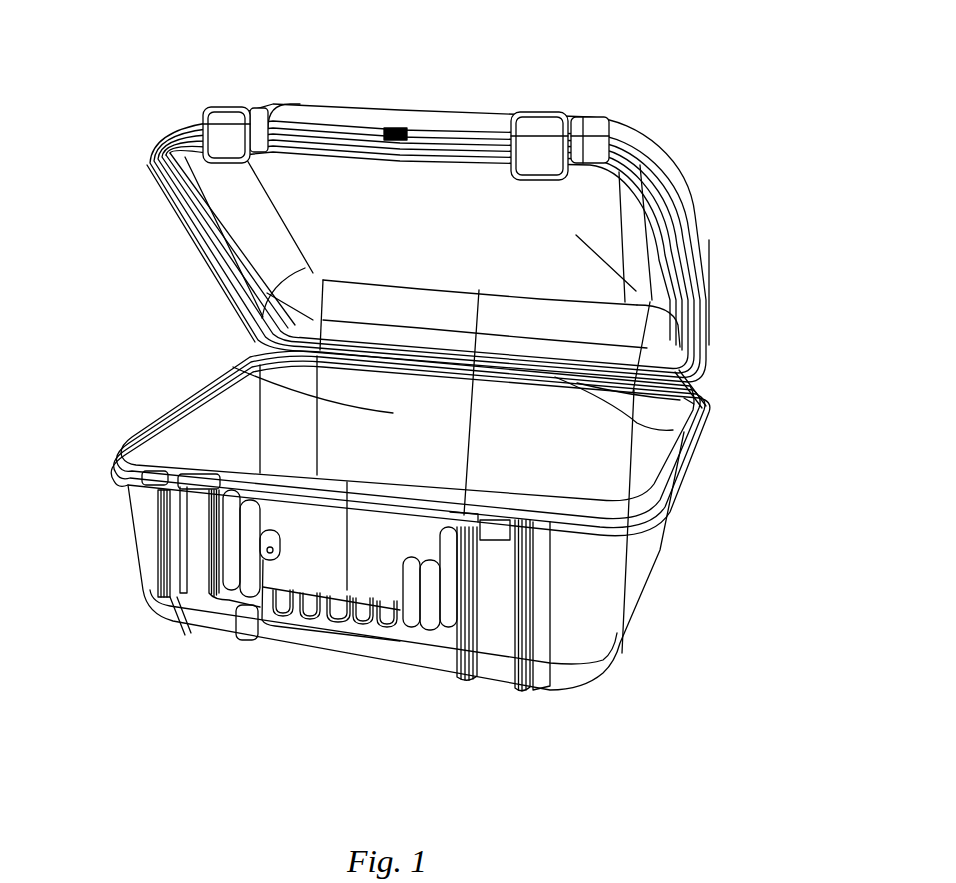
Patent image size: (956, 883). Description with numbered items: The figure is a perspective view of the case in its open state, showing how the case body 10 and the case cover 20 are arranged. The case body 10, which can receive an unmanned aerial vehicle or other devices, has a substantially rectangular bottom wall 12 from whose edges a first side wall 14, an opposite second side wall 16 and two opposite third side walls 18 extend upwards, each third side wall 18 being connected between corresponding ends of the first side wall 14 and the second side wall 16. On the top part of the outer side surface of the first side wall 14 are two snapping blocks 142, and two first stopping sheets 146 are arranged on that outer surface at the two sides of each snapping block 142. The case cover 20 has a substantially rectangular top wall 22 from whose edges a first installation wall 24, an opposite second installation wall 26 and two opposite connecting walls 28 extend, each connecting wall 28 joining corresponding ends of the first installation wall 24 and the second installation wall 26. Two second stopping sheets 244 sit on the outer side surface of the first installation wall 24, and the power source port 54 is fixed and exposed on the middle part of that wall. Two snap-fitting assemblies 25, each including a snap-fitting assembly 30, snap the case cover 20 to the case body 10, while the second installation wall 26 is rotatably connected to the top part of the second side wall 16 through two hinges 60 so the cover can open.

The case body 10 is at (670, 580).
The bottom wall 12 is at (432, 670).
The first side wall 14 is at (323, 568).
The second side wall 16 is at (234, 369).
The third side walls 18 is at (193, 425).
The case cover 20 is at (748, 172).
The top wall 22 is at (706, 310).
The first installation wall 24 is at (321, 130).
The snap-fitting assemblies 25 is at (252, 88).
The second installation wall 26 is at (694, 426).
The connecting walls 28 is at (227, 251).
The snap-fitting assembly 30 is at (537, 152).
The power source port 54 is at (401, 125).
The hinges 60 is at (690, 403).
The snapping blocks 142 is at (190, 500).
The first stopping sheets 146 is at (475, 620).
The second stopping sheets 244 is at (592, 116).